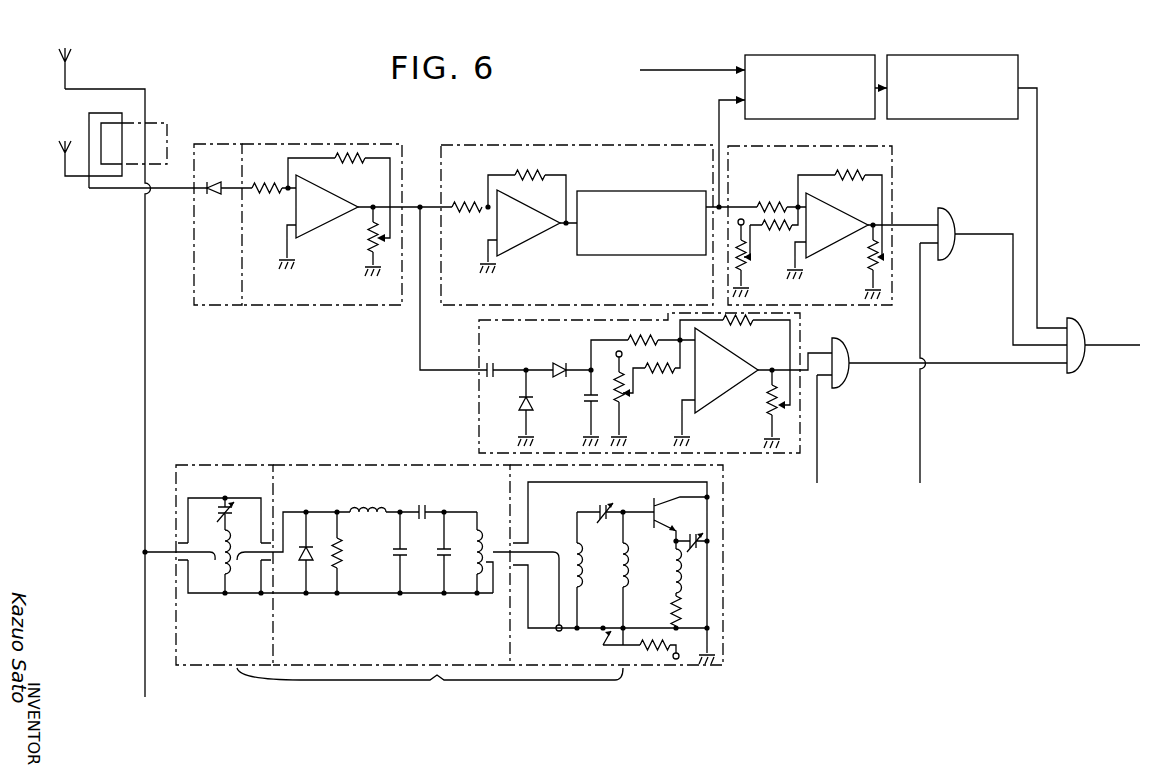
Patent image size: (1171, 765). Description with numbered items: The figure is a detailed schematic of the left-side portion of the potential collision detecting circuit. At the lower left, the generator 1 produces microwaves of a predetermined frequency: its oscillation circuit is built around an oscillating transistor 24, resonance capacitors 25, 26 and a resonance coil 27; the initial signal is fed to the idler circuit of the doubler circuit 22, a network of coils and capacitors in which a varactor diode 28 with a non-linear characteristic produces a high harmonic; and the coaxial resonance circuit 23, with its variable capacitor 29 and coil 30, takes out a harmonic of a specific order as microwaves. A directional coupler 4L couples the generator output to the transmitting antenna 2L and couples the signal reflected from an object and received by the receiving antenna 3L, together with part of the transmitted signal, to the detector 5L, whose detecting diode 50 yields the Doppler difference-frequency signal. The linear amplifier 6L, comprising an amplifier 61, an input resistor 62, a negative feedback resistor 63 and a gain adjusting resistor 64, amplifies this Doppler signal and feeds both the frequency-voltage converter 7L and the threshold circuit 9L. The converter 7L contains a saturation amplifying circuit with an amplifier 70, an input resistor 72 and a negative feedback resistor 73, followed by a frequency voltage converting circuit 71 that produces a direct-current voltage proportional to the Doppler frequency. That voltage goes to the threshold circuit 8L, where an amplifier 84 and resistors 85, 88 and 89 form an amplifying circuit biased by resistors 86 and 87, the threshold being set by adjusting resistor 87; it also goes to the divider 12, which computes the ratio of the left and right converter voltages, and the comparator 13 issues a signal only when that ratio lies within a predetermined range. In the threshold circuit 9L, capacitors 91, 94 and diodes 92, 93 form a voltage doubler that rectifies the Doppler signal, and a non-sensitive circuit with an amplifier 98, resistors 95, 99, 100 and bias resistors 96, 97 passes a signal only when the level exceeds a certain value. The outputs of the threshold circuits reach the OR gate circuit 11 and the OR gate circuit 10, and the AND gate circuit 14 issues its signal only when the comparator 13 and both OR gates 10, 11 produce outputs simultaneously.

The generator 1 is at (445, 706).
The transmitting antenna 2L is at (72, 60).
The receiving antenna 3L is at (72, 143).
The directional coupler 4L is at (167, 123).
The detector 5L is at (240, 144).
The amplifier 6L is at (322, 210).
The frequency-voltage converter 7L is at (577, 211).
The threshold circuit 8L is at (892, 146).
The threshold circuit 9L is at (478, 337).
The OR gate circuit 10 is at (837, 339).
The OR gate circuit 11 is at (952, 211).
The divider 12 is at (810, 103).
The comparator 13 is at (944, 120).
The AND gate circuit 14 is at (1081, 322).
The doubler circuit 22 is at (344, 465).
The coaxial resonance circuit 23 is at (195, 465).
The oscillating transistor 24 is at (672, 497).
The resonance capacitor 25 is at (706, 534).
The resonance capacitor 26 is at (597, 511).
The resonance coil 27 is at (578, 558).
The varactor diode 28 is at (287, 552).
The variable capacitor 29 is at (215, 504).
The coil 30 is at (222, 580).
The detecting diode 50 is at (222, 171).
The amplifier 61 is at (318, 222).
The input resistor 62 is at (265, 170).
The negative feedback resistor 63 is at (339, 197).
The gain adjusting resistor 64 is at (362, 241).
The amplifier 70 is at (513, 252).
The frequency voltage converting circuit 71 is at (656, 262).
The input resistor 72 is at (468, 193).
The negative feedback resistor 73 is at (538, 175).
The amplifier 84 is at (836, 208).
The resistor 85 is at (772, 193).
The resistor 86 is at (771, 234).
The resistor 87 is at (756, 258).
The resistor 88 is at (840, 187).
The resistor 89 is at (865, 270).
The capacitor 91 is at (495, 357).
The diode 92 is at (518, 400).
The diode 93 is at (556, 364).
The capacitor 94 is at (583, 400).
The resistor 95 is at (628, 337).
The resistor 96 is at (654, 370).
The resistor 97 is at (637, 398).
The amplifier 98 is at (716, 387).
The resistor 99 is at (735, 342).
The resistor 100 is at (749, 411).